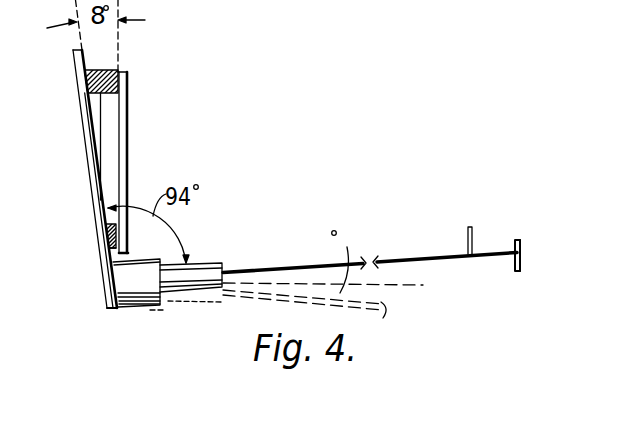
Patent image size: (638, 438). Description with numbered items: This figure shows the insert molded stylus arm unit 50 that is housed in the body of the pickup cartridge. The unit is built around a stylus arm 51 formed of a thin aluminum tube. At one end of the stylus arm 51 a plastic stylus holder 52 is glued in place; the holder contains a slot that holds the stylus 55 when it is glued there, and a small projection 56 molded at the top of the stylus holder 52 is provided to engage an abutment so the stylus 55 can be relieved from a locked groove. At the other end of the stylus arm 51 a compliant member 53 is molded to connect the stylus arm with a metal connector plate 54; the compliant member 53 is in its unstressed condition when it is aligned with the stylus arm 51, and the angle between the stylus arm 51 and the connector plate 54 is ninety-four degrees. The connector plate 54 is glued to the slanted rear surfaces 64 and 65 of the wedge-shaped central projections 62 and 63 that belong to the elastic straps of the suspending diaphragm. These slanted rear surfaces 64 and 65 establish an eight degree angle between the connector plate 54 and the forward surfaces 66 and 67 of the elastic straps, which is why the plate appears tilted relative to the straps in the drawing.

The stylus arm unit 50 is at (359, 190).
The stylus arm 51 is at (417, 256).
The plastic stylus holder 52 is at (498, 250).
The compliant member 53 is at (128, 282).
The connector plate 54 is at (88, 163).
The stylus 55 is at (521, 268).
The small projection 56 is at (473, 233).
The central projection 62 is at (98, 70).
The central projection 63 is at (108, 224).
The slanted rear surface 64 is at (85, 80).
The slanted rear surface 65 is at (106, 243).
The forward surface 66 is at (127, 83).
The forward surface 67 is at (128, 244).